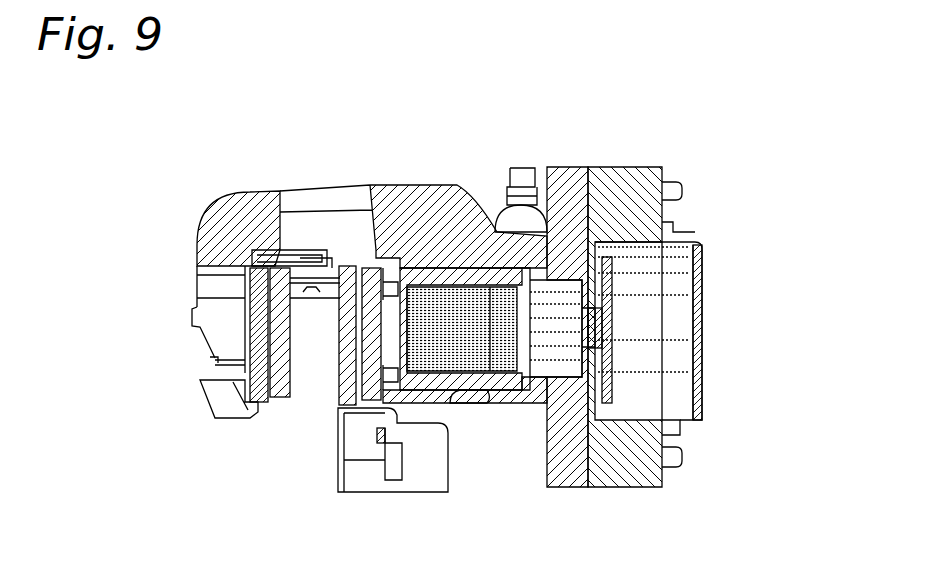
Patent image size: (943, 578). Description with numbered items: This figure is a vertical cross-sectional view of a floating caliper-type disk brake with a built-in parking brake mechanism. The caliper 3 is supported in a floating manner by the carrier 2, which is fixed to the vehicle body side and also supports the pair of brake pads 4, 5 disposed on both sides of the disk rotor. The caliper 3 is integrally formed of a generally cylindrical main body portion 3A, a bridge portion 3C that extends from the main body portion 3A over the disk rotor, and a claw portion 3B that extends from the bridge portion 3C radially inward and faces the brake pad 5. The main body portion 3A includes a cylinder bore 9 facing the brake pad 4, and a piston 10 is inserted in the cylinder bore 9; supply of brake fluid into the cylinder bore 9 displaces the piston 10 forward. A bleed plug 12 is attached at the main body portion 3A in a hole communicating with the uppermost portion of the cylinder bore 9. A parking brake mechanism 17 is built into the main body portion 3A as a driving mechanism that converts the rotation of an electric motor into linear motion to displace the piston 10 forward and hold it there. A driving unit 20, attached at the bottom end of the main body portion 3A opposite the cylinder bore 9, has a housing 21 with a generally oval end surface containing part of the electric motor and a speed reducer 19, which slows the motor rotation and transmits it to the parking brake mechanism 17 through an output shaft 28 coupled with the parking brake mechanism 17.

The carrier 2 is at (360, 463).
The caliper 3 is at (402, 186).
The main body portion 3A is at (462, 186).
The claw portion 3B is at (207, 289).
The bridge portion 3C is at (310, 190).
The brake pad 4 is at (340, 407).
The brake pad 5 is at (293, 375).
The cylinder bore 9 is at (458, 400).
The piston 10 is at (466, 396).
The bleed plug 12 is at (521, 168).
The parking brake mechanism 17 is at (550, 365).
The speed reducer 19 is at (680, 306).
The driving unit 20 is at (718, 220).
The housing 21 is at (645, 450).
The output shaft 28 is at (586, 418).